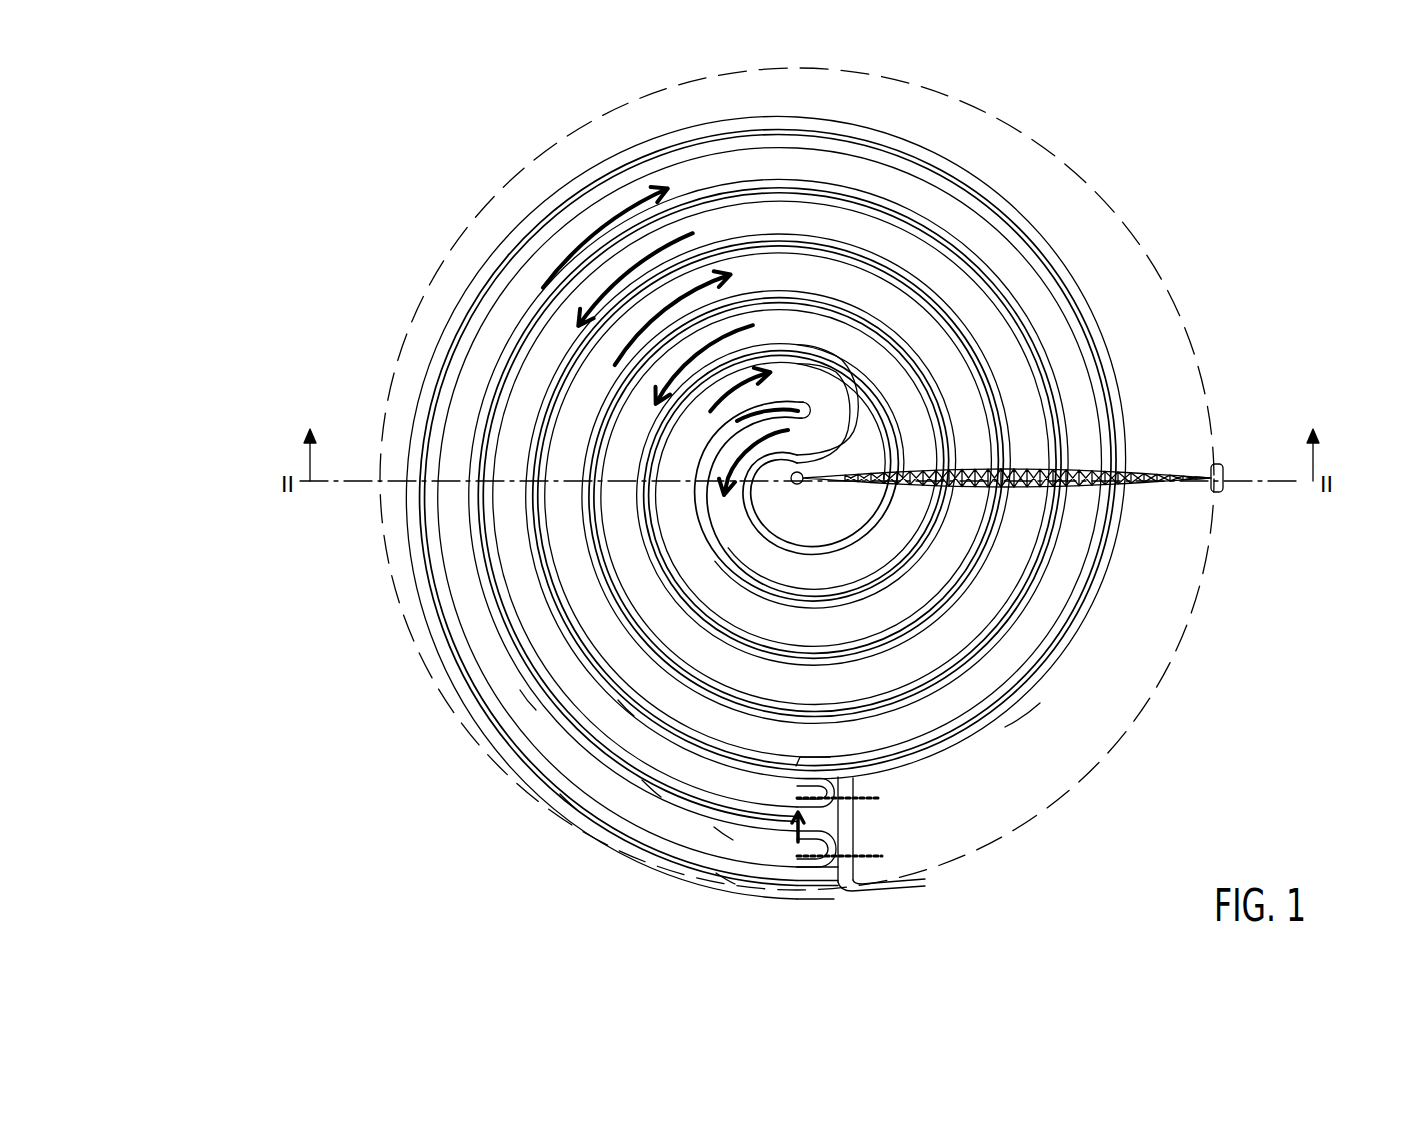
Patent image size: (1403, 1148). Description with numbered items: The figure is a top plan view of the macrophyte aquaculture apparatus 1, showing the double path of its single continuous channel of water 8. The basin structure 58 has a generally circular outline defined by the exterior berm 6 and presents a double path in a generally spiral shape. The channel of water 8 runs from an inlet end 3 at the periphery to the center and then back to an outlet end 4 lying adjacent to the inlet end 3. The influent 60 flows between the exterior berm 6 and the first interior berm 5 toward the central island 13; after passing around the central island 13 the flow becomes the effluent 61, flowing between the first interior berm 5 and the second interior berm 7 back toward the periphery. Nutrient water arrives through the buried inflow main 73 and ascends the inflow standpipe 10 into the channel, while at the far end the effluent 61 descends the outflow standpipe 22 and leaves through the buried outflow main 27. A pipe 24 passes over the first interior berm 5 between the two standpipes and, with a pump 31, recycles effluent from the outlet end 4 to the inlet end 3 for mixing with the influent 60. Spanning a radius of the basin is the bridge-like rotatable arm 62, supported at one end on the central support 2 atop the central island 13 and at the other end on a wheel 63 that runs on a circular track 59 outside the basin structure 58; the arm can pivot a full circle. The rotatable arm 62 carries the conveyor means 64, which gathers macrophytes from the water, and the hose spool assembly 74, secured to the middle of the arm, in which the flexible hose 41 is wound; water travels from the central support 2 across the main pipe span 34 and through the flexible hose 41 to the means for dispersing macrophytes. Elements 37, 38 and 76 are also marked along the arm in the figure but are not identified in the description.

The macrophyte aquaculture apparatus 1 is at (1137, 124).
The central support 2 is at (793, 484).
The inlet end 3 is at (722, 878).
The outlet end 4 is at (720, 832).
The first interior berm 5 is at (648, 786).
The exterior berm 6 is at (565, 800).
The second interior berm 7 is at (625, 705).
The channel of water 8 is at (527, 698).
The inflow standpipe 10 is at (800, 866).
The central island 13 is at (813, 508).
The outflow standpipe 22 is at (880, 755).
The pipe 24 is at (841, 835).
The buried outflow main 27 is at (879, 798).
The pump 31 is at (836, 893).
The main pipe span 34 is at (866, 471).
The second spacer section 37 is at (910, 469).
The third spacer section 38 is at (973, 469).
The flexible hose 41 is at (1045, 492).
The basin structure 58 is at (1010, 733).
The circular track 59 is at (1196, 610).
The influent 60 is at (586, 234).
The effluent 61 is at (685, 236).
The rotatable arm 62 is at (1198, 491).
The wheel 63 is at (1217, 468).
The conveyor means 64 is at (1097, 457).
The buried inflow main 73 is at (873, 858).
The hose spool assembly 74 is at (1005, 488).
The spacer section 76 is at (1033, 469).